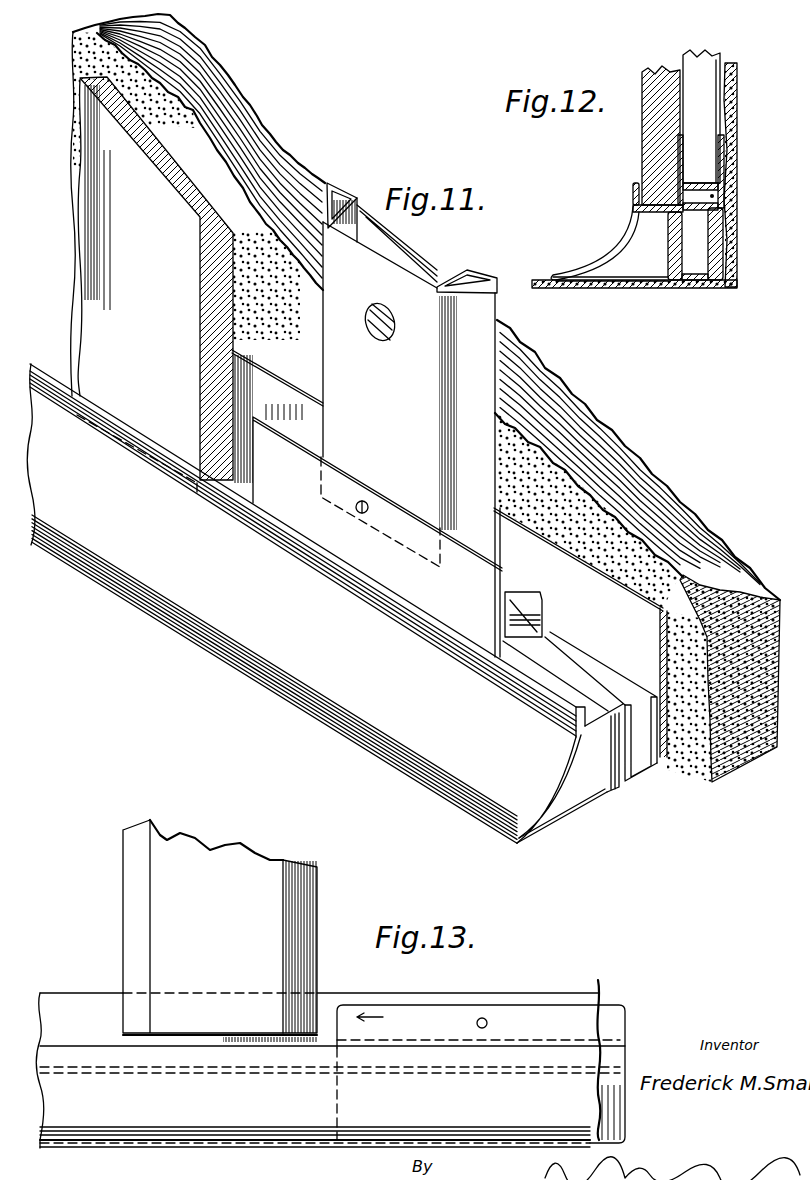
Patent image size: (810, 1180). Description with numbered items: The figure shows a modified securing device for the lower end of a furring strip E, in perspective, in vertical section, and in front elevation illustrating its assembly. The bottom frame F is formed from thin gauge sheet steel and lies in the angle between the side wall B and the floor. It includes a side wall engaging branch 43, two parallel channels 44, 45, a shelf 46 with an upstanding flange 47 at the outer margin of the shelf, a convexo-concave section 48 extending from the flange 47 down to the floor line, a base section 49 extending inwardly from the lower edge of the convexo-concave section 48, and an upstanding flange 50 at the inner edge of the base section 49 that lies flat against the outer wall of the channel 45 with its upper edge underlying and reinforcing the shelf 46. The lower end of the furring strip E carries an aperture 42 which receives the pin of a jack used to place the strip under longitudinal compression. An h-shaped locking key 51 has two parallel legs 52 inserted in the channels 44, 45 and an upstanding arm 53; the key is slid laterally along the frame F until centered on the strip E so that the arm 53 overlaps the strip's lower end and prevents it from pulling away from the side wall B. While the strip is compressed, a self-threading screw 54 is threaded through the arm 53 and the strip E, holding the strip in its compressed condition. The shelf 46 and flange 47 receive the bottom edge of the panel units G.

In FIG. 11, the side wall B is at (562, 484).
In FIG. 11, the furring strip E is at (417, 266).
In FIG. 12, the furring strip E is at (698, 60).
In FIG. 13, the furring strip E is at (145, 893).
In FIG. 11, the bottom frame F is at (245, 688).
In FIG. 11, the panel units G is at (152, 256).
In FIG. 12, the panel units G is at (657, 72).
In FIG. 11, the aperture 42 is at (386, 342).
In FIG. 11, the side wall engaging branch 43 is at (723, 678).
In FIG. 12, the side wall engaging branch 43 is at (735, 148).
In FIG. 13, the side wall engaging branch 43 is at (598, 995).
In FIG. 11, the channel 44 is at (655, 698).
In FIG. 12, the channel 44 is at (723, 246).
In FIG. 11, the channel 45 is at (623, 700).
In FIG. 12, the channel 45 is at (690, 284).
In FIG. 11, the shelf 46 is at (630, 768).
In FIG. 12, the shelf 46 is at (655, 207).
In FIG. 11, the upstanding flange 47 is at (540, 680).
In FIG. 12, the upstanding flange 47 is at (632, 190).
In FIG. 13, the upstanding flange 47 is at (440, 1046).
In FIG. 11, the convexo-concave section 48 is at (538, 800).
In FIG. 12, the convexo-concave section 48 is at (612, 248).
In FIG. 13, the convexo-concave section 48 is at (255, 1120).
In FIG. 11, the base section 49 is at (538, 846).
In FIG. 12, the base section 49 is at (622, 286).
In FIG. 11, the upstanding flange 50 is at (612, 785).
In FIG. 12, the upstanding flange 50 is at (668, 245).
In FIG. 11, the locking key 51 is at (512, 595).
In FIG. 12, the locking key 51 is at (710, 183).
In FIG. 12, the legs 52 is at (700, 200).
In FIG. 11, the upstanding arm 53 is at (490, 580).
In FIG. 12, the upstanding arm 53 is at (678, 160).
In FIG. 13, the upstanding arm 53 is at (548, 1015).
In FIG. 11, the self-threading screw 54 is at (368, 498).